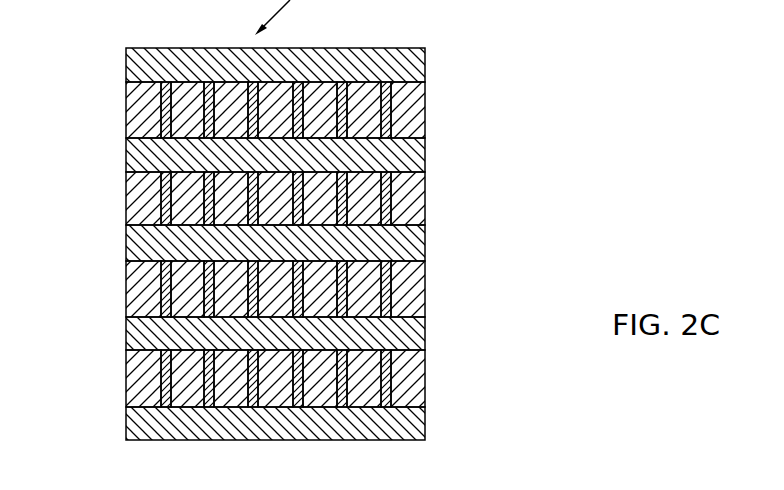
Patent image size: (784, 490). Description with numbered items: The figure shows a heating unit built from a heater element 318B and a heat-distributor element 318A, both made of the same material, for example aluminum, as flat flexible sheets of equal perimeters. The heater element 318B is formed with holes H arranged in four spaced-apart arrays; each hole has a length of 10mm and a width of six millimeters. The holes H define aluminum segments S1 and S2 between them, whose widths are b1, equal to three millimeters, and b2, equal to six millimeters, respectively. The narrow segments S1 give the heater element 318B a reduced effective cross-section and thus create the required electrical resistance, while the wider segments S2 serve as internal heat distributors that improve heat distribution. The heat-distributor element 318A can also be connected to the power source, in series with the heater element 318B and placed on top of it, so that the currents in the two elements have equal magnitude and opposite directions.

The heat-distributor element 318A is at (400, 157).
The heater element 318B is at (403, 111).
The holes H is at (187, 187).
The segments S1 is at (205, 308).
The segments S2 is at (403, 247).
The width of segments S1 b1 is at (379, 440).
The width of segments S2 b2 is at (52, 318).
The length of holes 10mm is at (423, 173).